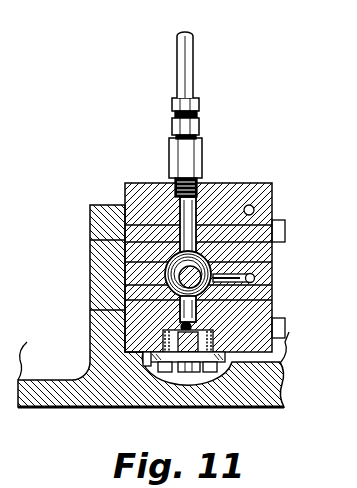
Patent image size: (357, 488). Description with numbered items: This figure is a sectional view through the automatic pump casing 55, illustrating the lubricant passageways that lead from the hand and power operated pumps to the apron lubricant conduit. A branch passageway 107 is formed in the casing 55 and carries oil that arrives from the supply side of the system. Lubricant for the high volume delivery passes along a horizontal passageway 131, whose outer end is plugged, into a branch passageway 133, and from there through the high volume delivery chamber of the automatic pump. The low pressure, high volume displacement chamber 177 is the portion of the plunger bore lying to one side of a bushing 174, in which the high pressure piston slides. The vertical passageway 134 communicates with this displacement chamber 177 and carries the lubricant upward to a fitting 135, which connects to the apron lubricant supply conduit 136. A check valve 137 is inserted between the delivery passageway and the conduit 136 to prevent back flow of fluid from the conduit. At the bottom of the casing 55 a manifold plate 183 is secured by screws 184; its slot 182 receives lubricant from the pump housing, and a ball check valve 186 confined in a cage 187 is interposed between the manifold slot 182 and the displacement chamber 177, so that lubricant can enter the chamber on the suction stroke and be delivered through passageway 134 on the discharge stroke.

The automatic pump casing 55 is at (272, 207).
The branch passageway 107 is at (252, 205).
The horizontal passageway 131 is at (255, 281).
The branch passageway 133 is at (244, 266).
The vertical passageway 134 is at (198, 212).
The fitting 135 is at (199, 127).
The apron lubricant supply conduit 136 is at (193, 77).
The check valve 137 is at (172, 161).
The bushing 174 is at (168, 272).
The low pressure, high volume displacement chamber 177 is at (168, 281).
The slot 182 is at (197, 377).
The manifold plate 183 is at (143, 364).
The screw 184 is at (163, 372).
The ball check valve 186 is at (190, 372).
The cage 187 is at (178, 320).